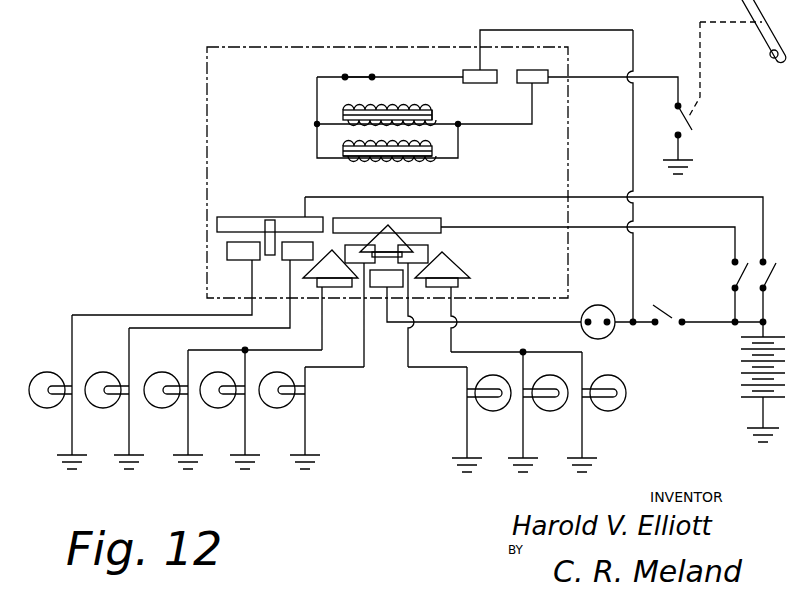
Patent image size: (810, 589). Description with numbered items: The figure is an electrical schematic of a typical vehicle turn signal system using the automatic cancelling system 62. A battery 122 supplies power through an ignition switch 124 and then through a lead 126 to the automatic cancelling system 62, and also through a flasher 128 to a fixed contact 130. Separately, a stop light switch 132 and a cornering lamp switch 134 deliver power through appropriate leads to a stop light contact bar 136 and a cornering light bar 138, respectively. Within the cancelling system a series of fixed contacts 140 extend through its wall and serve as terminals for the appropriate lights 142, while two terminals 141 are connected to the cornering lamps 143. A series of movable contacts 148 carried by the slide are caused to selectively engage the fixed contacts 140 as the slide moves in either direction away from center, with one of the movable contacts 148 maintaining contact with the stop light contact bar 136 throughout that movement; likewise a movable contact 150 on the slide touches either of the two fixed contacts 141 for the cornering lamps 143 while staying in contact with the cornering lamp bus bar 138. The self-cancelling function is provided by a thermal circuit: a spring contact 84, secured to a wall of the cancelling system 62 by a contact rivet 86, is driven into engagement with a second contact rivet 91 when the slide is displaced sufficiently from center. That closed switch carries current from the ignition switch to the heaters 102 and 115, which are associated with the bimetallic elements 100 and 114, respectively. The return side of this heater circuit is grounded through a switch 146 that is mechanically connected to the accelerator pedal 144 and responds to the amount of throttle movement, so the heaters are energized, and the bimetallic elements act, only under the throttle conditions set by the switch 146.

The automatic cancelling system 62 is at (207, 76).
The spring contact 84 is at (357, 72).
The contact rivet 86 is at (373, 76).
The contact rivet 91 is at (345, 76).
The bimetallic element 100 is at (433, 151).
The heater 102 is at (408, 160).
The bimetallic element 114 is at (433, 117).
The heater 115 is at (372, 110).
The battery 122 is at (746, 398).
The ignition switch 124 is at (670, 318).
The lead 126 is at (633, 250).
The flasher 128 is at (597, 305).
The fixed contact 130 is at (382, 288).
The stop light switch 132 is at (745, 277).
The cornering lamp switch 134 is at (772, 267).
The stop light contact bar 136 is at (432, 220).
The cornering light bar 138 is at (250, 220).
The fixed contacts 140 is at (350, 246).
The terminals 141 is at (236, 250).
The lights 142 is at (162, 406).
The cornering lamps 143 is at (38, 405).
The accelerator pedal 144 is at (763, 28).
The switch 146 is at (692, 128).
The movable contacts 148 is at (388, 228).
The movable contact 150 is at (271, 220).